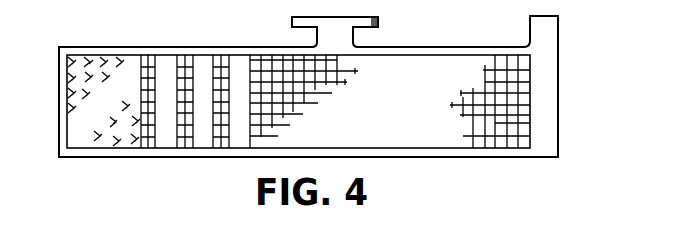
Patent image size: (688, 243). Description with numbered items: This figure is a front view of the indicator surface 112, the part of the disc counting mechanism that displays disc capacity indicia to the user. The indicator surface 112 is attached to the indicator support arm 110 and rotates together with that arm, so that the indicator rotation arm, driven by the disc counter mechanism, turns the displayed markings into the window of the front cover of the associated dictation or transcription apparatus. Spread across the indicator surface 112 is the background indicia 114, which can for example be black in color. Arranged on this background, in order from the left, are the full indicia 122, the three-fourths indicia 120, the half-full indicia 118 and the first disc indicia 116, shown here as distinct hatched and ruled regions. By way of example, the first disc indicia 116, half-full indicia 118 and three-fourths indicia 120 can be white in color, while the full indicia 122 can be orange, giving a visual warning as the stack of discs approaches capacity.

The indicator support arm 110 is at (379, 22).
The indicator surface 112 is at (555, 118).
The background indicia 114 is at (453, 63).
The first disc indicia 116 is at (241, 62).
The half-full indicia 118 is at (203, 62).
The three-fourths indicia 120 is at (162, 62).
The full indicia 122 is at (127, 62).